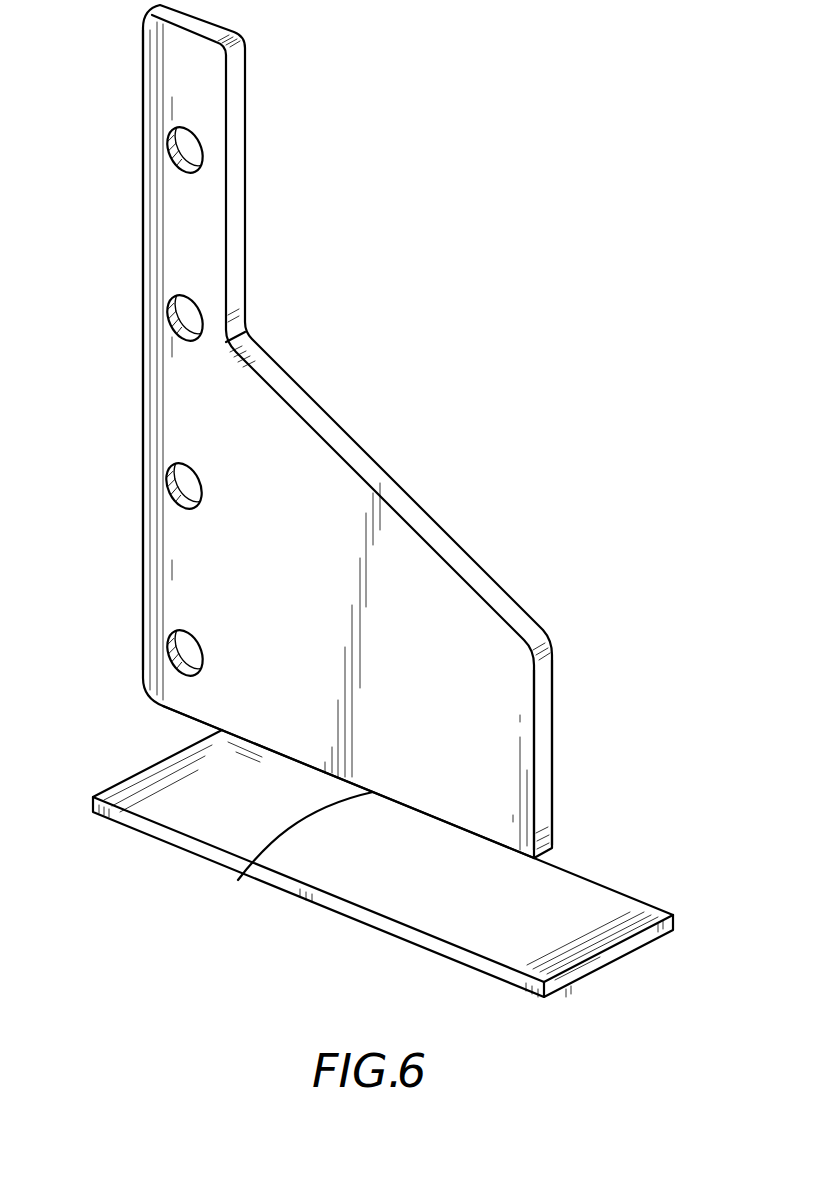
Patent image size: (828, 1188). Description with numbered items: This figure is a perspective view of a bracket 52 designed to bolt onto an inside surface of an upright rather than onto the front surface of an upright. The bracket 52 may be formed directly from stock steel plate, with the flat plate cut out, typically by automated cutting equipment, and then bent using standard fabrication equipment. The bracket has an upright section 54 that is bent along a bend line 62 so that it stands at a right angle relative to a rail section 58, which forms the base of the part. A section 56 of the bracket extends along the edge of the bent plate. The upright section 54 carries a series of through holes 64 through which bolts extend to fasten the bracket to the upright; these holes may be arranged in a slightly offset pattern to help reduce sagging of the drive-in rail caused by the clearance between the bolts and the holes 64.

The bracket 52 is at (395, 427).
The upright section 54 is at (163, 379).
The section 56 is at (520, 720).
The rail section 58 is at (597, 913).
The bend line 62 is at (238, 880).
The through holes 64 is at (188, 481).